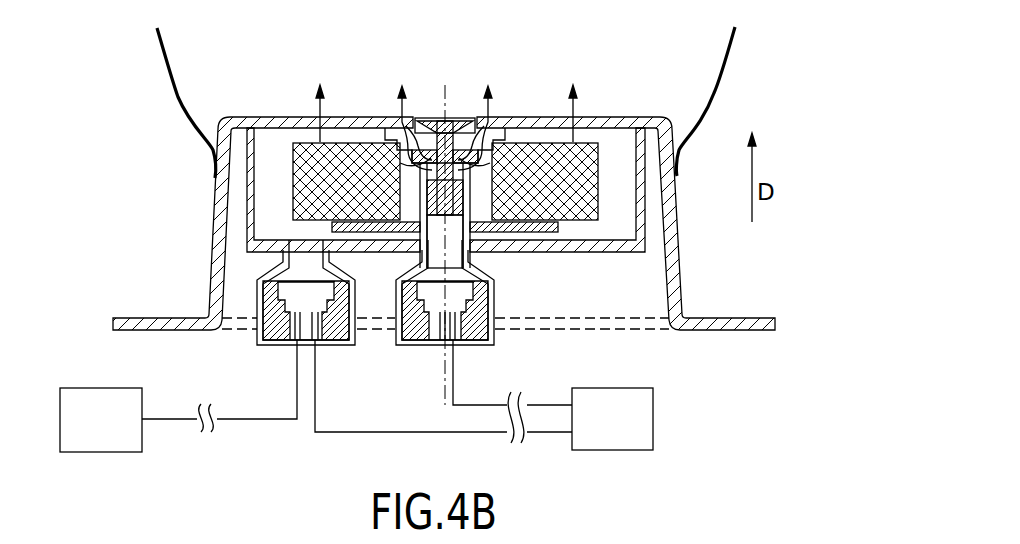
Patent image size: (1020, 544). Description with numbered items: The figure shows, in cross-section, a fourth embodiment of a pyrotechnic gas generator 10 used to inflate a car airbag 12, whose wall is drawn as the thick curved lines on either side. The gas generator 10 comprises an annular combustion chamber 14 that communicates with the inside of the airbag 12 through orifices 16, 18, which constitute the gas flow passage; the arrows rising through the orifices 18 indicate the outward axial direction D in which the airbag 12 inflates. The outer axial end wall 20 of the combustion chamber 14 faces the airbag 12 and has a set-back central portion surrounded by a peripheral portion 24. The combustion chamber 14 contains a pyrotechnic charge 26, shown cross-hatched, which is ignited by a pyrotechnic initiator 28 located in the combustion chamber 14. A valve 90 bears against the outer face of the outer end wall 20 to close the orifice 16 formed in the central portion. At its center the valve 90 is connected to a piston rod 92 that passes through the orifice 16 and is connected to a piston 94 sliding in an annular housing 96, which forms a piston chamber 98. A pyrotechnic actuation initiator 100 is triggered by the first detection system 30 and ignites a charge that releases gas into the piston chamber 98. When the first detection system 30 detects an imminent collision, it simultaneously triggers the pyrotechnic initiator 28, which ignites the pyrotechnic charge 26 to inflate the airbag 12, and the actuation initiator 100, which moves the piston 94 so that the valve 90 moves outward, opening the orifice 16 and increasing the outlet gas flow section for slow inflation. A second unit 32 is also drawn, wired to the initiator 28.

The pyrotechnic gas generator 10 is at (639, 96).
The airbag 12 is at (166, 56).
The combustion chamber 14 is at (623, 147).
The orifice 16 is at (430, 157).
The orifice 18 is at (322, 108).
The outer axial end wall 20 is at (224, 120).
The peripheral portion 24 is at (251, 117).
The pyrotechnic charge 26 is at (305, 174).
The pyrotechnic initiator 28 is at (290, 288).
The first detection system 30 is at (599, 430).
The control unit 32 is at (88, 431).
The valve 90 is at (457, 116).
The piston rod 92 is at (422, 118).
The piston 94 is at (457, 203).
The annular housing 96 is at (427, 197).
The piston chamber 98 is at (452, 228).
The pyrotechnic actuation initiator 100 is at (467, 288).